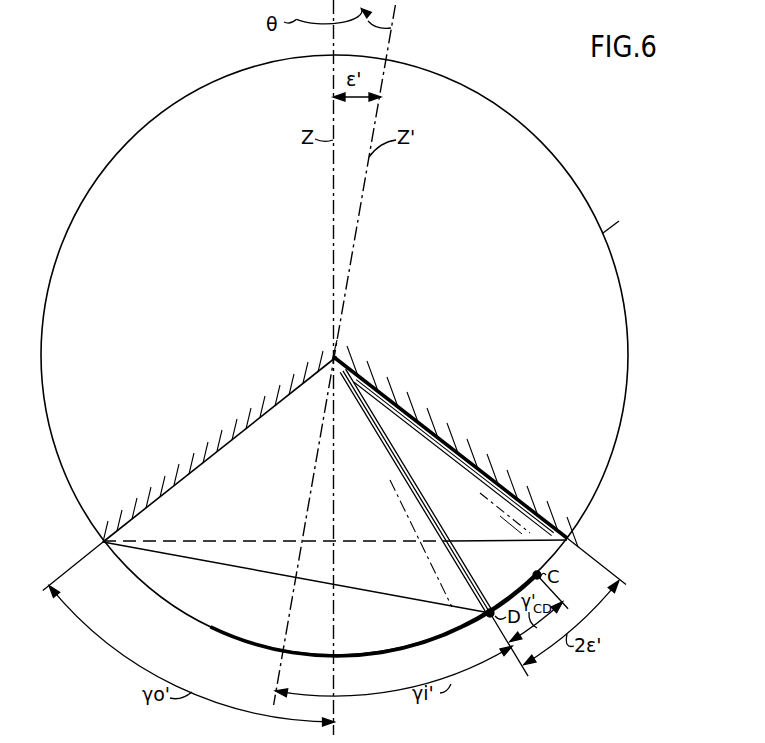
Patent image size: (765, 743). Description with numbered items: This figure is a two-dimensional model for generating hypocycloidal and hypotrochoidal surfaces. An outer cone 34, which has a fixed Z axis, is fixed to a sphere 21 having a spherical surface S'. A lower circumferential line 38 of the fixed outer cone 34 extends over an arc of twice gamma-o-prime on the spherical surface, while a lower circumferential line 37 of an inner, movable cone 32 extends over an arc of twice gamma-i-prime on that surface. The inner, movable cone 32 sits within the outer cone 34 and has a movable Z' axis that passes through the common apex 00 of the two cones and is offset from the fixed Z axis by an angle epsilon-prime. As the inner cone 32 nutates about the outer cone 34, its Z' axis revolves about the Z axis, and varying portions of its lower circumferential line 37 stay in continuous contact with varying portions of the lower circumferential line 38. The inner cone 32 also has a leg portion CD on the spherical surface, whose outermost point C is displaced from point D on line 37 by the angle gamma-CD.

The sphere 21 is at (622, 296).
The common apex 00 is at (338, 356).
The inner movable cone 32 is at (280, 482).
The outer cone 34 is at (470, 463).
The lower circumferential line of inner cone 37 is at (229, 566).
The lower circumferential line of outer cone 38 is at (489, 541).